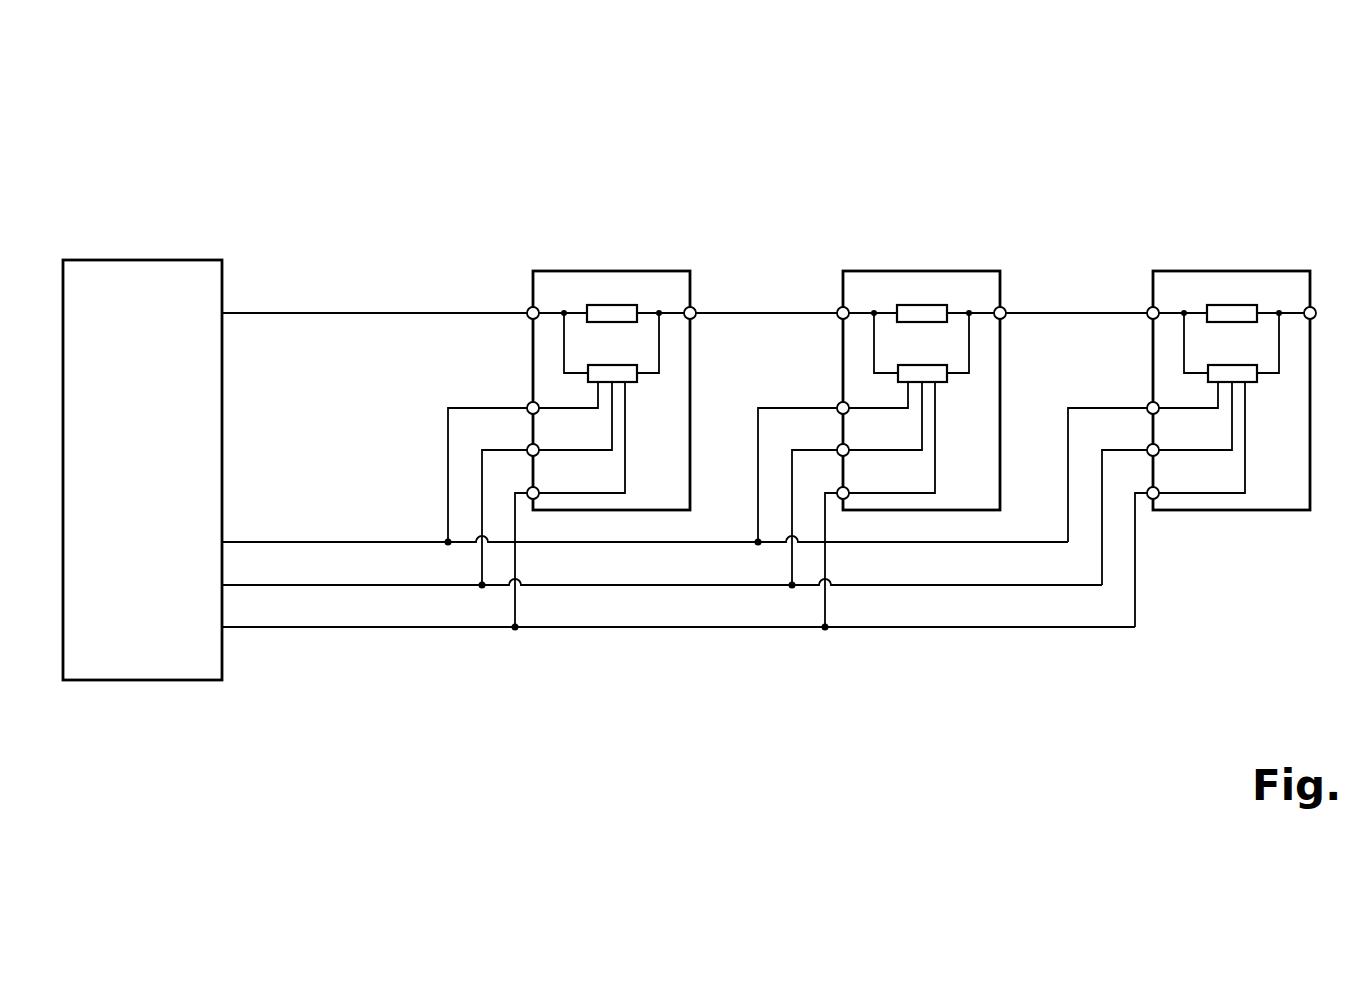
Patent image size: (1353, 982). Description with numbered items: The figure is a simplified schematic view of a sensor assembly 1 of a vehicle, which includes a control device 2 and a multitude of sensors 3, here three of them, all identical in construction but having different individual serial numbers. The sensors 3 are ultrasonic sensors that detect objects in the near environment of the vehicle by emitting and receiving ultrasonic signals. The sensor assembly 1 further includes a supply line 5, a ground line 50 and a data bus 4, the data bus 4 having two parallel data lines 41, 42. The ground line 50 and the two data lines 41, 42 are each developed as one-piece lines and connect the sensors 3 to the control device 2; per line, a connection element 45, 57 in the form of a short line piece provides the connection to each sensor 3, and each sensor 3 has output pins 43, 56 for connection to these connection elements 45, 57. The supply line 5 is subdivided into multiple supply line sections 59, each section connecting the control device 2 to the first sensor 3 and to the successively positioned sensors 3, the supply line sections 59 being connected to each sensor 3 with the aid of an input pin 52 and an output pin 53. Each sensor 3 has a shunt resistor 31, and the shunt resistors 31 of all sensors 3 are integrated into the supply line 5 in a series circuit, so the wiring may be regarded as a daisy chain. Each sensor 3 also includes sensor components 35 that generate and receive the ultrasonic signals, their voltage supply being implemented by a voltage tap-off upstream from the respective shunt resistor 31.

The sensor assembly 1 is at (300, 118).
The control device 2 is at (135, 483).
The sensor 3 is at (613, 270).
The data bus 4 is at (298, 606).
The supply line 5 is at (337, 312).
The shunt resistor 31 is at (623, 304).
The sensor components 35 is at (632, 384).
The data line 41 is at (363, 586).
The data line 42 is at (415, 628).
The output pin 43 is at (539, 450).
The connection element 45 is at (514, 520).
The ground line 50 is at (337, 542).
The input pin 52 is at (528, 308).
The output pin 53 is at (695, 308).
The output pin 56 is at (528, 403).
The connection element 57 is at (447, 430).
The supply line section 59 is at (426, 312).